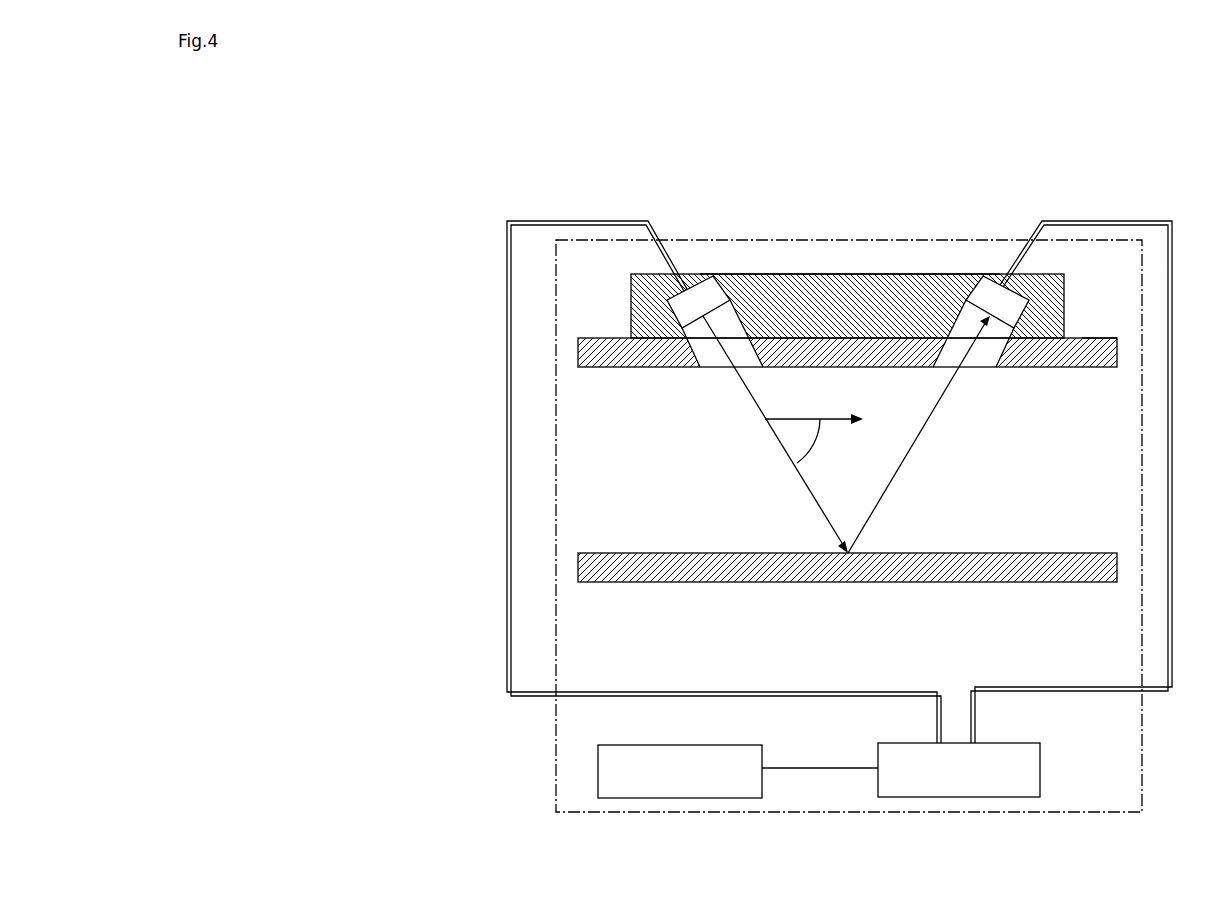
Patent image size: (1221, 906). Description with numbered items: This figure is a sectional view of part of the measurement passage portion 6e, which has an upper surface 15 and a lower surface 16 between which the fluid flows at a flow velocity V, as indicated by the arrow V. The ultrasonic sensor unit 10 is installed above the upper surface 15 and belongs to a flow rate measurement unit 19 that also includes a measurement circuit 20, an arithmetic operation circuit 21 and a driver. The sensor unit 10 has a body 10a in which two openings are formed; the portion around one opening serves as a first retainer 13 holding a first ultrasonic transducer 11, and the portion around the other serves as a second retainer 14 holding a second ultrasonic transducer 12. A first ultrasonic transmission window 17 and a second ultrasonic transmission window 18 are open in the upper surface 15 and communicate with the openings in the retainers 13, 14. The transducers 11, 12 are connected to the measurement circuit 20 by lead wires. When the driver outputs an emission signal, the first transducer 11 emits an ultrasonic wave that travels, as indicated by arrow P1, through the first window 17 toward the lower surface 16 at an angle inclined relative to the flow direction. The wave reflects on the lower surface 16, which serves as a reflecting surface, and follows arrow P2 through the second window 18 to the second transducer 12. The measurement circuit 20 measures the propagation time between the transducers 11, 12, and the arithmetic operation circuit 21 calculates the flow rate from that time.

The ultrasonic sensor unit 10 is at (852, 274).
The body 10a is at (885, 274).
The first ultrasonic transducer 11 is at (697, 282).
The second ultrasonic transducer 12 is at (995, 278).
The first retainer 13 is at (657, 288).
The second retainer 14 is at (1037, 283).
The upper surface 15 is at (637, 368).
The lower surface 16 is at (668, 553).
The first ultrasonic transmission window 17 is at (722, 357).
The second ultrasonic transmission window 18 is at (983, 357).
The flow rate measurement unit 19 is at (826, 240).
The measurement circuit 20 is at (955, 797).
The arithmetic operation circuit 21 is at (705, 798).
The measurement passage portion 6e is at (1082, 338).
The arrow P1 is at (805, 487).
The arrow P2 is at (895, 482).
The flow velocity V is at (830, 420).